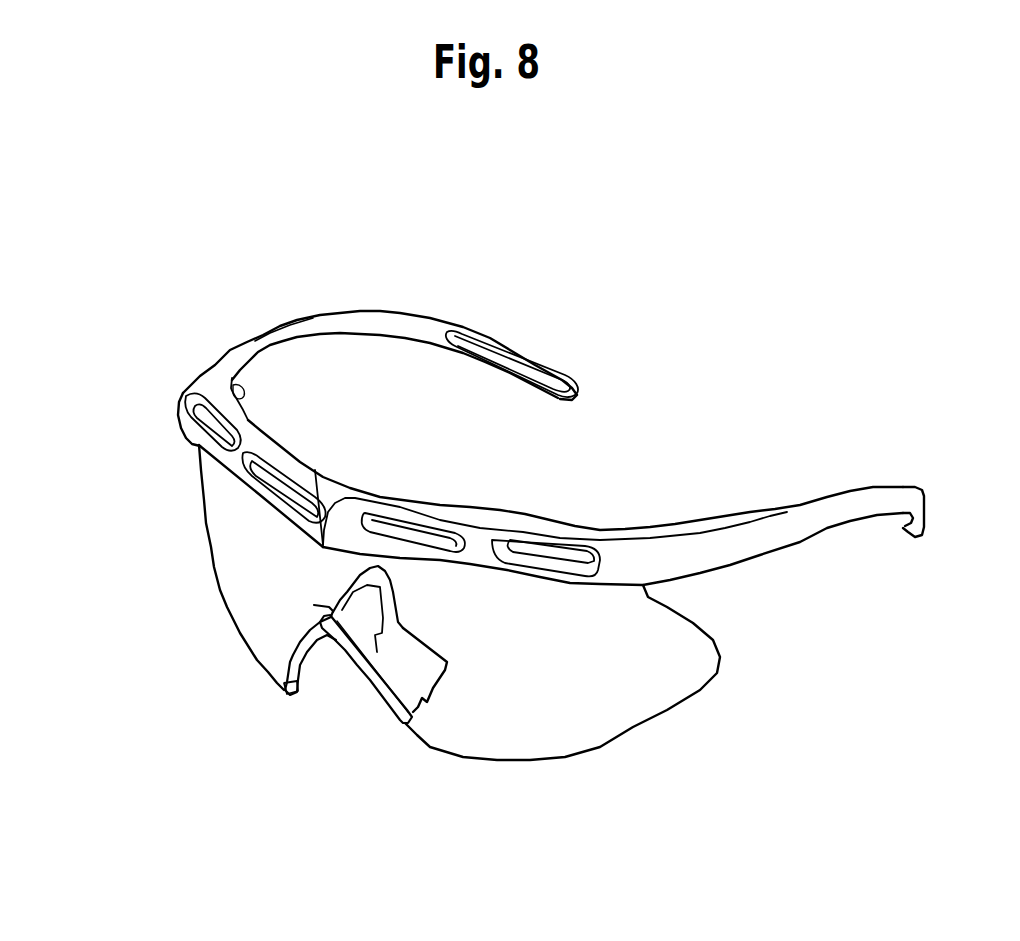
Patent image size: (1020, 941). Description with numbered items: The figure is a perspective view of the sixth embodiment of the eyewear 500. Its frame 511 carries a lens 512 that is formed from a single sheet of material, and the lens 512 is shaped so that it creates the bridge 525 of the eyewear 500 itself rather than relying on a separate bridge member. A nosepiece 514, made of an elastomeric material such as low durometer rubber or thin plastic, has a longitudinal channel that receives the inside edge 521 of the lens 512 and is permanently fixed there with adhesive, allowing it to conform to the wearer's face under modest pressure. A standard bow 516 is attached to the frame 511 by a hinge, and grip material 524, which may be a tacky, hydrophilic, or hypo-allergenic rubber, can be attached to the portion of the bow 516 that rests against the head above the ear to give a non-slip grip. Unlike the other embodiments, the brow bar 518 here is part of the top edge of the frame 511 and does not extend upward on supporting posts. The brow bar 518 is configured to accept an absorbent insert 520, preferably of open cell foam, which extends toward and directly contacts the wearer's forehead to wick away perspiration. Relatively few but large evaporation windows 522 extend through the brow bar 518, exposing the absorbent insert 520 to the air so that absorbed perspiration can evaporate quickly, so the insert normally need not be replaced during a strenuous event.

The eyewear 500 is at (487, 436).
The frame 511 is at (145, 414).
The lens 512 is at (459, 656).
The nosepiece 514 is at (228, 672).
The bow 516 is at (863, 559).
The brow bar 518 is at (431, 492).
The absorbent insert 520 is at (383, 330).
The inside edge of lens 521 is at (222, 710).
The evaporation windows 522 is at (577, 516).
The grip material 524 is at (543, 319).
The bridge 525 is at (260, 640).